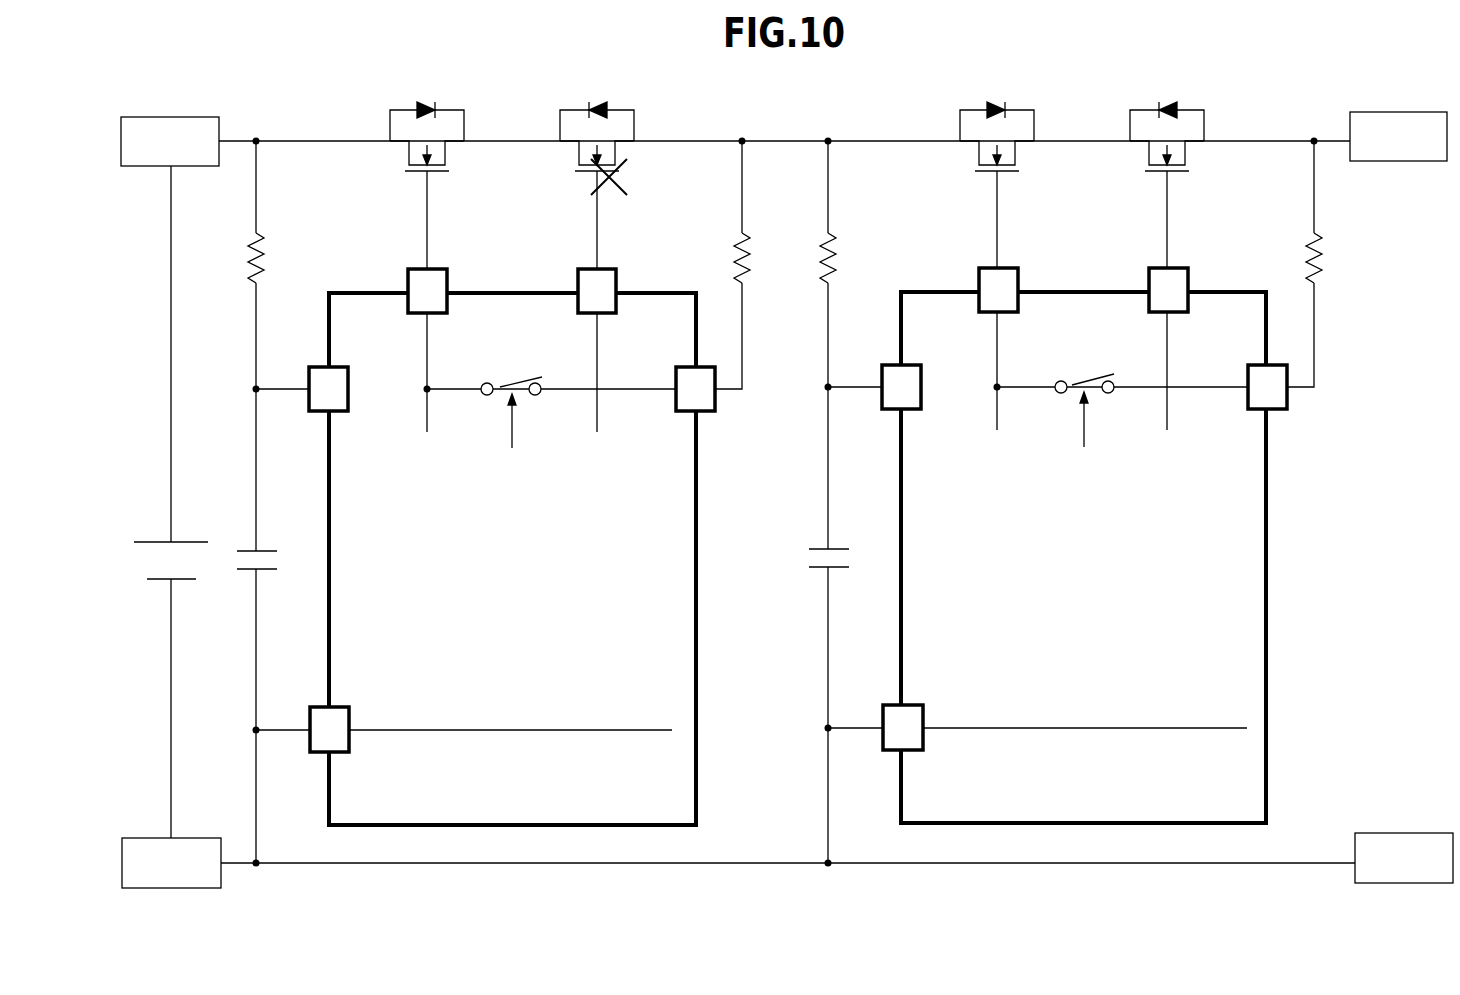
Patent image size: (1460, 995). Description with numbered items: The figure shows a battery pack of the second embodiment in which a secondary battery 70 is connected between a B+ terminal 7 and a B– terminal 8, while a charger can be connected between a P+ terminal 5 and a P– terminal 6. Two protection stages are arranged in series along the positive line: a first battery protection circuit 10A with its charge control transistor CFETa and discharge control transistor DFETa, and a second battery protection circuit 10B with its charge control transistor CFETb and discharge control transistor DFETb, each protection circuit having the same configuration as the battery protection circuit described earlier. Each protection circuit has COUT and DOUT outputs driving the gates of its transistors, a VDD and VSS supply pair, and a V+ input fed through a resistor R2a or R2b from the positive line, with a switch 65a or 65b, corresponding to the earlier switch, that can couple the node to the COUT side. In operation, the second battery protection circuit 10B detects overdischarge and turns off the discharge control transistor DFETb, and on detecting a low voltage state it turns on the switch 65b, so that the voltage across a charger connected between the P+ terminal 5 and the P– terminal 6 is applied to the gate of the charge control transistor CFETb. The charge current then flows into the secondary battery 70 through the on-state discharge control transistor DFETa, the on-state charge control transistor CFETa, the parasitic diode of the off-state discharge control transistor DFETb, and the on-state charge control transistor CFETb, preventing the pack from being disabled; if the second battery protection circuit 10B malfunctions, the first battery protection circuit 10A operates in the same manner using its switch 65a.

The P+ terminal 5 is at (1400, 111).
The P– terminal 6 is at (1405, 832).
The B+ terminal 7 is at (170, 115).
The B– terminal 8 is at (185, 836).
The secondary battery 70 is at (148, 559).
The first battery protection circuit 10A is at (1212, 290).
The second battery protection circuit 10B is at (640, 291).
The resistor R2a is at (1320, 239).
The resistor R2b is at (745, 232).
The switch 65a is at (1089, 381).
The switch 65b is at (517, 382).
The charge control transistor CFETa is at (974, 185).
The discharge control transistor DFETa is at (1142, 185).
The charge control transistor CFETb is at (403, 185).
The discharge control transistor DFETb is at (586, 174).